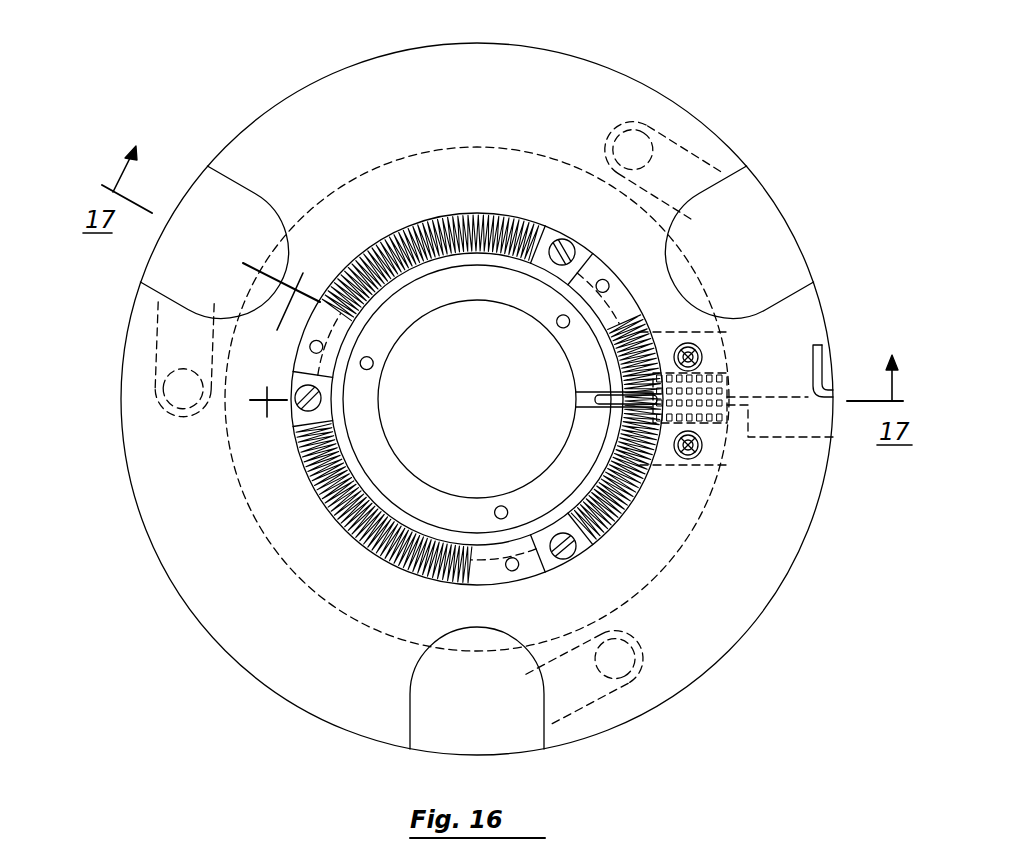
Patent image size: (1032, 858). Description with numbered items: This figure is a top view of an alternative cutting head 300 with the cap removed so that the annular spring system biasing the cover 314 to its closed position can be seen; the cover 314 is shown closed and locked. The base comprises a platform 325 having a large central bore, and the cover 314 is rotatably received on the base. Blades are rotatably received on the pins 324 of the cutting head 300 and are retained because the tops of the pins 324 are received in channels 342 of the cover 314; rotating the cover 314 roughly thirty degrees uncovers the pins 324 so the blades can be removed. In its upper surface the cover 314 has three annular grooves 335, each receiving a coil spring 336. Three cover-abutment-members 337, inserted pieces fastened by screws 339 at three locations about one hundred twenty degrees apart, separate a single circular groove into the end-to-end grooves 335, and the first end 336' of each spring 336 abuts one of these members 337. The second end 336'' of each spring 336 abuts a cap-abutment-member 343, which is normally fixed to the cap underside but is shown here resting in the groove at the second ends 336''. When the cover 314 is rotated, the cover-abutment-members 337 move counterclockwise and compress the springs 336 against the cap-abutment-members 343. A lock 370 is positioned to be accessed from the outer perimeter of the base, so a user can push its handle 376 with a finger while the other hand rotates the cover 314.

The cutting head 300 is at (272, 52).
The cover 314 is at (484, 68).
The pins 324 is at (165, 386).
The platform 325 is at (207, 193).
The annular grooves 335 is at (396, 236).
The coil spring 336 is at (499, 381).
The first end of spring 336' is at (393, 505).
The second end of spring 336'' is at (393, 505).
The cover-abutment-member 337 is at (552, 232).
The screws 339 is at (573, 243).
The channels 342 is at (176, 330).
The cap-abutment-member 343 is at (327, 323).
The lock 370 is at (728, 362).
The handle 376 is at (828, 347).